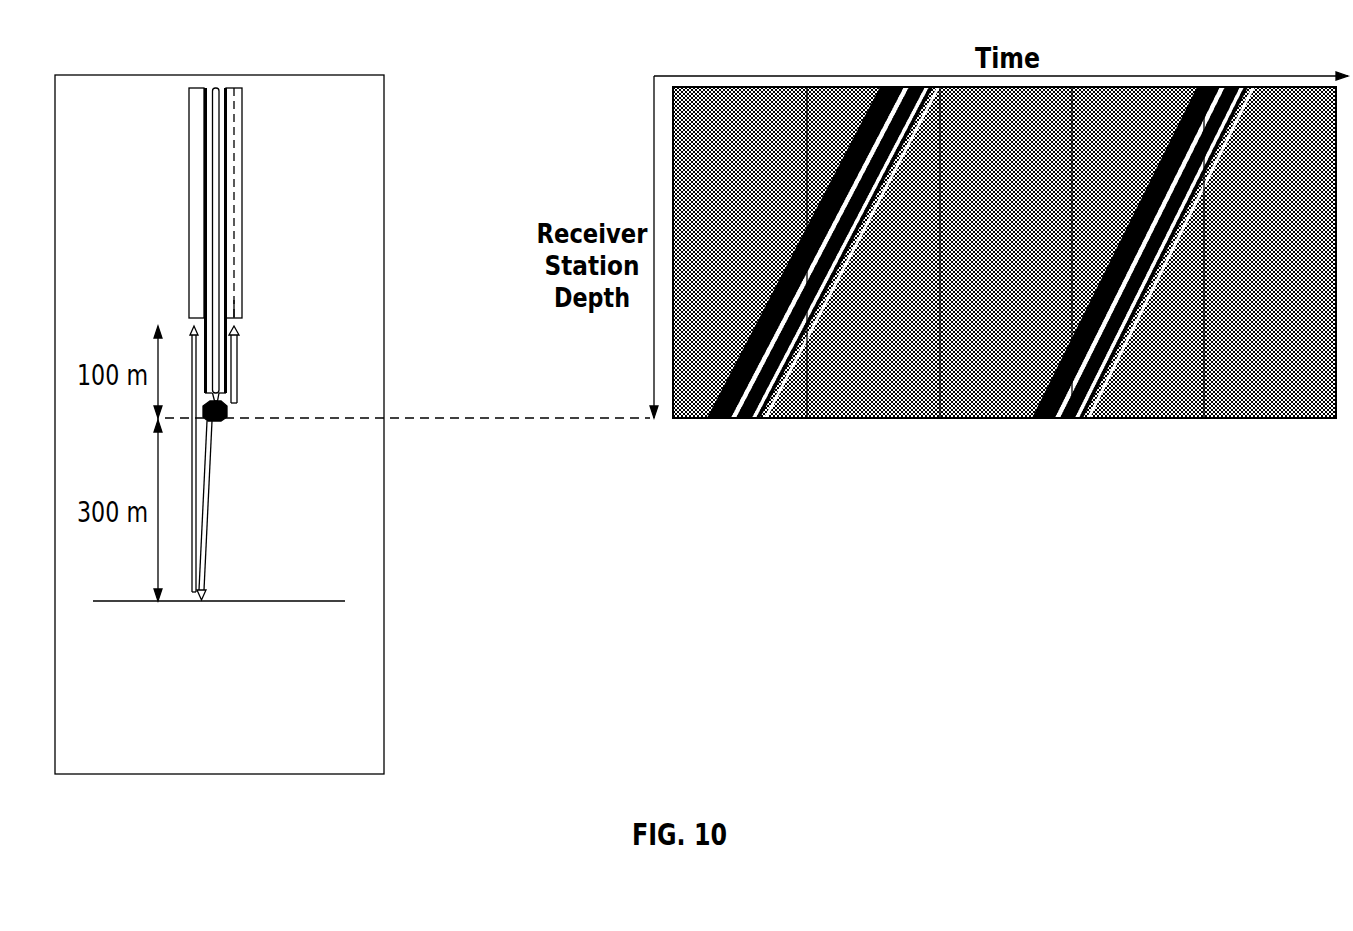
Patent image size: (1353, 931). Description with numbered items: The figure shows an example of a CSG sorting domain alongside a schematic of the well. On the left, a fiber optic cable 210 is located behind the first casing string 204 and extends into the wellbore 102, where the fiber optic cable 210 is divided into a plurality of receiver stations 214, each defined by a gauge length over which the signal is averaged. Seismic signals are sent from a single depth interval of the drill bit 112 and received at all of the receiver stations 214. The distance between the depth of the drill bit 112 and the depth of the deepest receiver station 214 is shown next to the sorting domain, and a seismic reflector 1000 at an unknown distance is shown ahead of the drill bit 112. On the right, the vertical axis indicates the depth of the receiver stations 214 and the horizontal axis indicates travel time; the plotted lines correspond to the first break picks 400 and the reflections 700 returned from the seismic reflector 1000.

The first casing string 204 is at (203, 117).
The wellbore 102 is at (210, 152).
The fiber optic cable 210 is at (236, 184).
The receiver station 214 is at (234, 310).
The first break picks 400 is at (240, 377).
The drill bit 112 is at (227, 407).
The reflections 700 is at (198, 482).
The seismic reflector 1000 is at (230, 603).